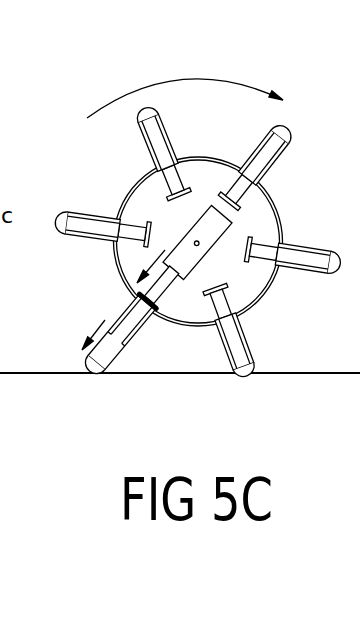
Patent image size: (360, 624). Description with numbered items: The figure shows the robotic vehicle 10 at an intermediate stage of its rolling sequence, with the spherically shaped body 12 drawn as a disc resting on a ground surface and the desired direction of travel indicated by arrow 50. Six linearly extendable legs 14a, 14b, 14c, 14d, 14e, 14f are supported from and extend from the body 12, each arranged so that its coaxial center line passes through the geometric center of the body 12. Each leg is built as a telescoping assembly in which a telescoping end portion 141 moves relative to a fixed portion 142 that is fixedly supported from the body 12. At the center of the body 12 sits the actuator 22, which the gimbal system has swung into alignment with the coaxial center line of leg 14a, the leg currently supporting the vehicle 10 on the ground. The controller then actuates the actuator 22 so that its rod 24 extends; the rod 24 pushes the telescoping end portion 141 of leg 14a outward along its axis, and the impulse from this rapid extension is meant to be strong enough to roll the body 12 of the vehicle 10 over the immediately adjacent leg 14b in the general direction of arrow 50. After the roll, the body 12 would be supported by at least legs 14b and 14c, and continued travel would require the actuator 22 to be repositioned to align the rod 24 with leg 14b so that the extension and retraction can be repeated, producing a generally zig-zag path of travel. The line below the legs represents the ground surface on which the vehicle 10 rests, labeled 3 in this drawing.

The robotic vehicle 10 is at (67, 117).
The arrow 50 is at (147, 83).
The spherically shaped body 12 is at (188, 142).
The leg 14a is at (124, 335).
The leg 14b is at (244, 333).
The leg 14c is at (305, 247).
The leg 14d is at (271, 167).
The leg 14e is at (149, 151).
The leg 14f is at (93, 215).
The telescoping end portion 141 is at (107, 368).
The fixed portion 142 is at (142, 335).
The actuator 22 is at (192, 258).
The rod 24 is at (132, 292).
The target surface 3 is at (180, 398).